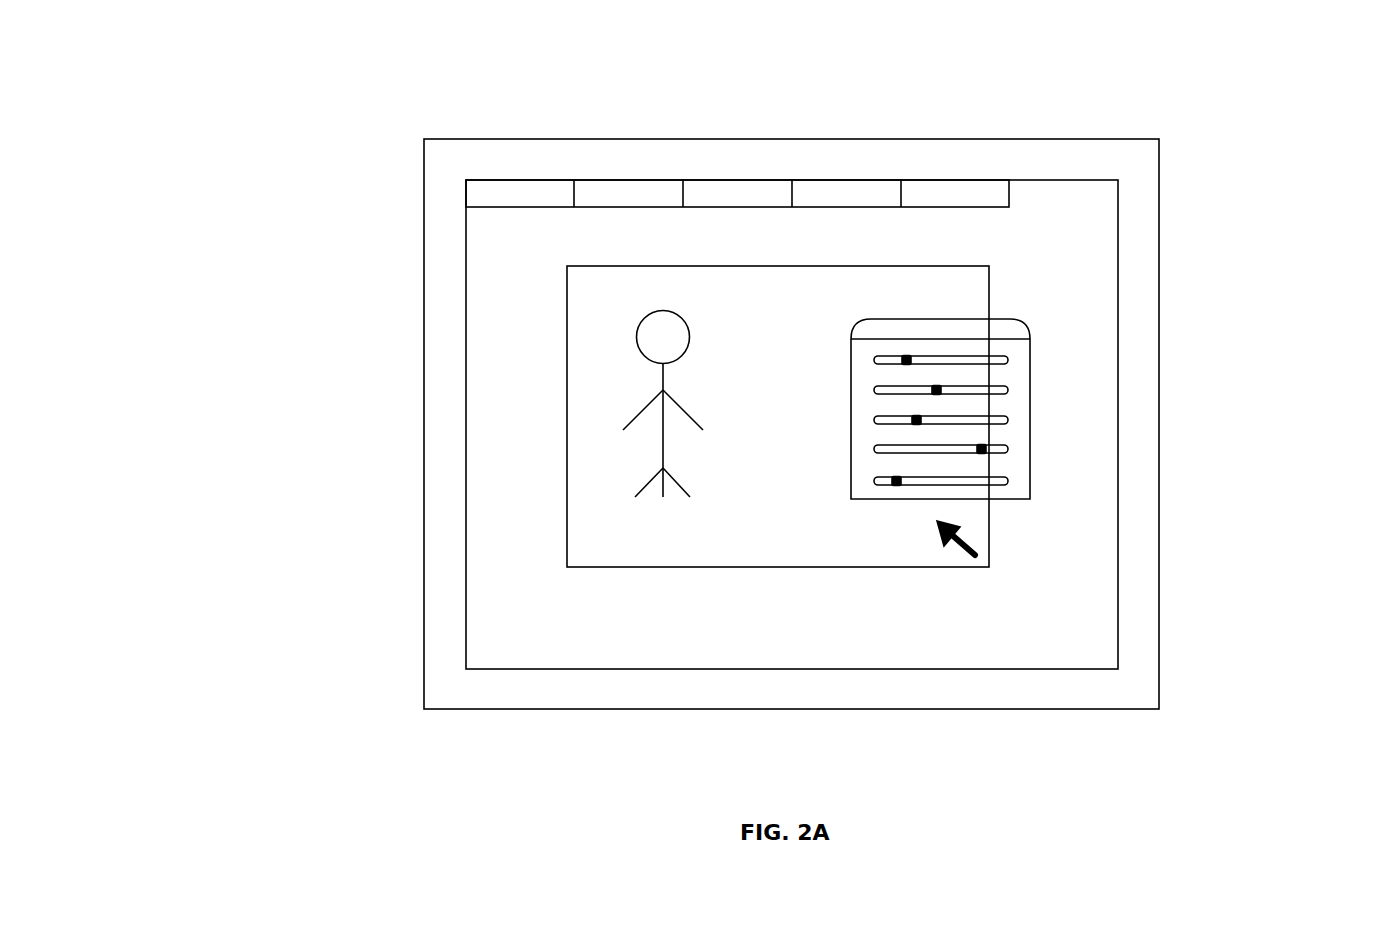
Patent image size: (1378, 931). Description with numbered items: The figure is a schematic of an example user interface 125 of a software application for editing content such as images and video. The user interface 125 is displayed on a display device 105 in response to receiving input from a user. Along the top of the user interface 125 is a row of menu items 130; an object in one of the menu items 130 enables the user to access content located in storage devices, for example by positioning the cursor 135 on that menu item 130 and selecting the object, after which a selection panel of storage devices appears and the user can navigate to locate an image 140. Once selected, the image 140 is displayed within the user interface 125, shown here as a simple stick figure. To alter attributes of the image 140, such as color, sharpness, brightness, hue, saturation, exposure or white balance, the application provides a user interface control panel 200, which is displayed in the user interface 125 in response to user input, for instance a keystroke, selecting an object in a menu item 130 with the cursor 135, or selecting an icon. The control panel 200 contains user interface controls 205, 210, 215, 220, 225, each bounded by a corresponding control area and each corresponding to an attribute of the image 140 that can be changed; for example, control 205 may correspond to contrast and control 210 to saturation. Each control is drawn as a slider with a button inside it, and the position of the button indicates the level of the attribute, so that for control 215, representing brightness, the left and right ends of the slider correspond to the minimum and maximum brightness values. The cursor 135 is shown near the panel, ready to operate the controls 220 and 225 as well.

The display device 105 is at (424, 174).
The user interface 125 is at (466, 282).
The menu items 130 is at (958, 180).
The image 140 is at (567, 388).
The cursor 135 is at (1102, 593).
The user interface control panel 200 is at (1079, 376).
The user interface control 205 is at (1109, 336).
The user interface control 210 is at (1109, 374).
The user interface control 215 is at (1008, 420).
The user interface control 220 is at (1109, 464).
The user interface control 225 is at (1109, 502).